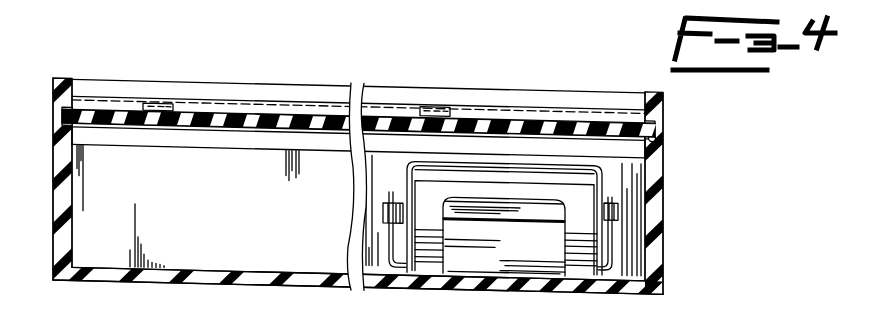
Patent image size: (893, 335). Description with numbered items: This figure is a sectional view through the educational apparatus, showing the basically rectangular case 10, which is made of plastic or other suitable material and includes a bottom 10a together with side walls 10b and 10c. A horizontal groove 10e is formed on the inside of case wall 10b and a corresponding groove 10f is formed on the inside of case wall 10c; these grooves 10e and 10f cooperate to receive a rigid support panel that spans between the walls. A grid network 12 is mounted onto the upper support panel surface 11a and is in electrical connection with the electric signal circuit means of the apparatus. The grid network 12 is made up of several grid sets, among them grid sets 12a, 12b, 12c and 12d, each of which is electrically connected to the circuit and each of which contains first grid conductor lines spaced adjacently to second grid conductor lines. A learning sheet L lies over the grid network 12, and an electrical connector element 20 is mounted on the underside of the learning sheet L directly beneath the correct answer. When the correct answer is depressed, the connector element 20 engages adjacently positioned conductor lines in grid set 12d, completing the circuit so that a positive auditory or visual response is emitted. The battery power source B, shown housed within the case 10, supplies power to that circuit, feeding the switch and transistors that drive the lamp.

The case 10 is at (663, 173).
The bottom 10a is at (293, 277).
The side wall 10b is at (57, 195).
The side wall 10c is at (663, 202).
The horizontal groove 10e is at (63, 127).
The groove 10f is at (656, 143).
The upper support panel surface 11a is at (333, 108).
The grid network 12 is at (131, 101).
The grid set 12a is at (180, 108).
The grid set 12b is at (272, 108).
The grid set 12c is at (595, 118).
The grid set 12d is at (463, 112).
The electrical connector element 20 is at (158, 102).
The learning sheet L is at (543, 110).
The battery power source B is at (583, 260).